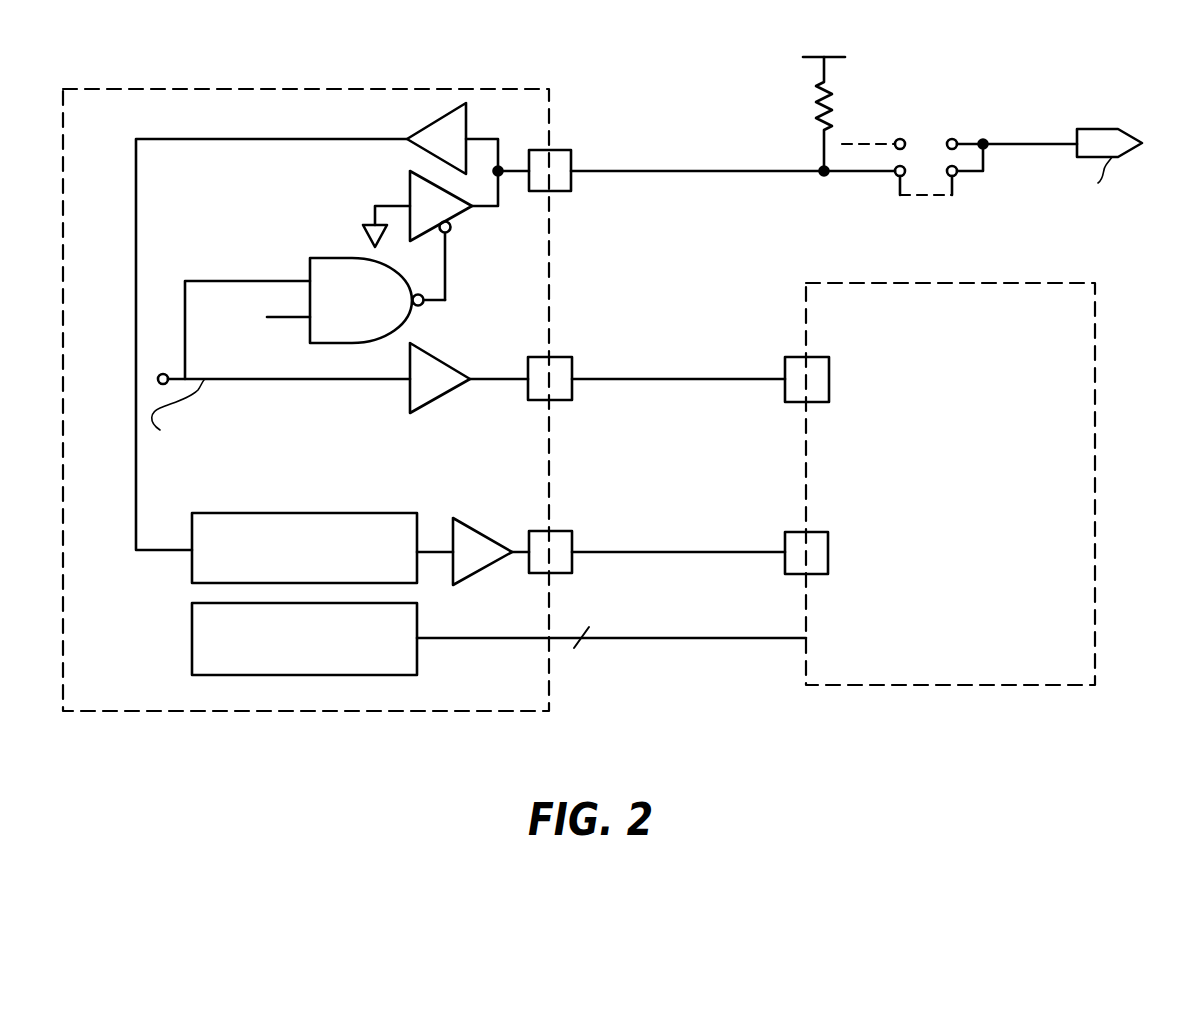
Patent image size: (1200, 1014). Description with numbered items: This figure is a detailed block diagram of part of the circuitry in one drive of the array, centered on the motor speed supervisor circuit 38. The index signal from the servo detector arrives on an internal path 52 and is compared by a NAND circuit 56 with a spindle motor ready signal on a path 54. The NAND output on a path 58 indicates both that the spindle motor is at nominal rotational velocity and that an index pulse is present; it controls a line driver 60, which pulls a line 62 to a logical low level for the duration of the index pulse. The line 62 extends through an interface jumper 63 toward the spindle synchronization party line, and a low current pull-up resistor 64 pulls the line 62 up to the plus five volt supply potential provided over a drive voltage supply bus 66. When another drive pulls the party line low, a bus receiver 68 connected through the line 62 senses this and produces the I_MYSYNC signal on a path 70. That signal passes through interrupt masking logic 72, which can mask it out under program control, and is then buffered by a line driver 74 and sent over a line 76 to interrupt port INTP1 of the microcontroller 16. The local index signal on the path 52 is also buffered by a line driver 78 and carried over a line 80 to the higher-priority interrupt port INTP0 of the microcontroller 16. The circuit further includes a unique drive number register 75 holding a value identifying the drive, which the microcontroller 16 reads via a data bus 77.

The motor speed supervisor circuit 38 is at (395, 88).
The path 70 is at (165, 139).
The bus receiver 68 is at (466, 130).
The line driver 60 is at (410, 174).
The NAND circuit 56 is at (308, 270).
The path 58 is at (446, 262).
The path 54 is at (287, 317).
The internal path 52 is at (158, 382).
The line driver 78 is at (462, 370).
The line 80 is at (668, 382).
The interrupt masking logic 72 is at (192, 570).
The line driver 74 is at (485, 572).
The line 76 is at (680, 553).
The unique drive number register 75 is at (418, 656).
The data bus 77 is at (690, 640).
The line 62 is at (571, 185).
The low current pull-up resistor 64 is at (814, 92).
The drive voltage supply bus 66 is at (838, 60).
The interface jumper 63 is at (880, 190).
The microcontroller 16 is at (1095, 434).